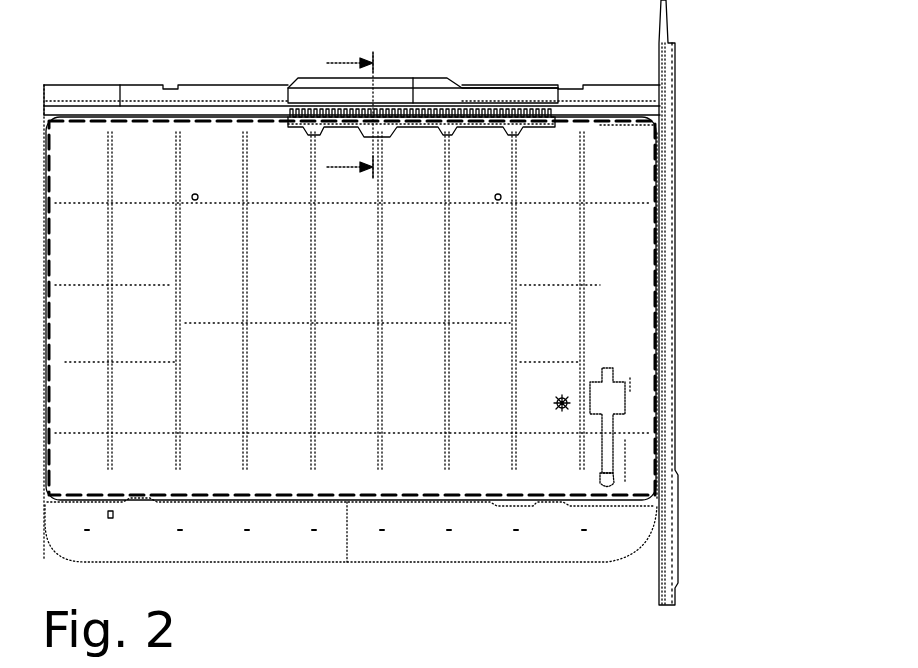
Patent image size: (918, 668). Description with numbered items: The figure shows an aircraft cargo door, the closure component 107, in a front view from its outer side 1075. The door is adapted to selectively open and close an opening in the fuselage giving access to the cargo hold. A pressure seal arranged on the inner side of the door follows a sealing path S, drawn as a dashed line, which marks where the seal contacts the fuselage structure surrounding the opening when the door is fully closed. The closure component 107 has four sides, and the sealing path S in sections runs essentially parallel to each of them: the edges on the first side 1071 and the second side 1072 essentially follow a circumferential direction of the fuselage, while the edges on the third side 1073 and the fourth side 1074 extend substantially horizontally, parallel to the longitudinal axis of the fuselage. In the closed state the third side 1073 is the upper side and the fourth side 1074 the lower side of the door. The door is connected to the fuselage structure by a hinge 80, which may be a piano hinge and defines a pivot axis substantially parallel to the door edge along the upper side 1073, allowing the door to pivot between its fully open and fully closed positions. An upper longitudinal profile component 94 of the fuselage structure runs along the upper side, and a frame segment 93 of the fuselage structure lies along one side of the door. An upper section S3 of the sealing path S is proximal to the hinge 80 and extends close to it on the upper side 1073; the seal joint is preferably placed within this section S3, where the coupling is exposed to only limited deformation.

The closure component 107 is at (202, 158).
The upper longitudinal profile component 94 is at (259, 96).
The third side 1073 is at (497, 75).
The hinge 80 is at (557, 112).
The upper section of the sealing path S3 is at (600, 125).
The sealing path S is at (657, 286).
The first side 1071 is at (668, 352).
The frame segment 93 is at (668, 427).
The second side 1072 is at (58, 302).
The fourth side 1074 is at (463, 573).
The outer side 1075 is at (390, 280).